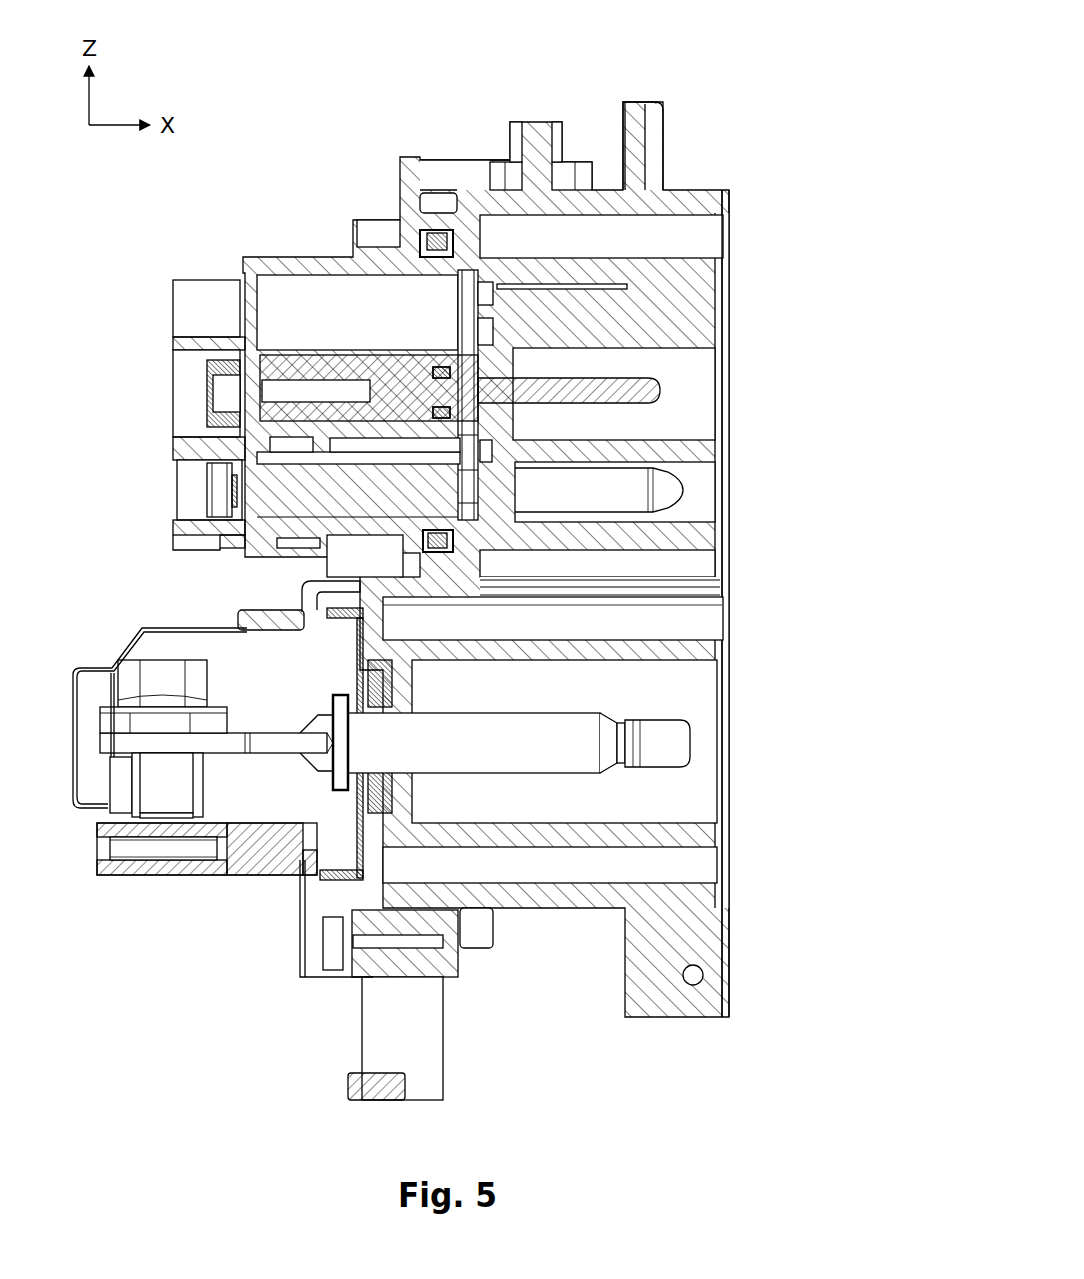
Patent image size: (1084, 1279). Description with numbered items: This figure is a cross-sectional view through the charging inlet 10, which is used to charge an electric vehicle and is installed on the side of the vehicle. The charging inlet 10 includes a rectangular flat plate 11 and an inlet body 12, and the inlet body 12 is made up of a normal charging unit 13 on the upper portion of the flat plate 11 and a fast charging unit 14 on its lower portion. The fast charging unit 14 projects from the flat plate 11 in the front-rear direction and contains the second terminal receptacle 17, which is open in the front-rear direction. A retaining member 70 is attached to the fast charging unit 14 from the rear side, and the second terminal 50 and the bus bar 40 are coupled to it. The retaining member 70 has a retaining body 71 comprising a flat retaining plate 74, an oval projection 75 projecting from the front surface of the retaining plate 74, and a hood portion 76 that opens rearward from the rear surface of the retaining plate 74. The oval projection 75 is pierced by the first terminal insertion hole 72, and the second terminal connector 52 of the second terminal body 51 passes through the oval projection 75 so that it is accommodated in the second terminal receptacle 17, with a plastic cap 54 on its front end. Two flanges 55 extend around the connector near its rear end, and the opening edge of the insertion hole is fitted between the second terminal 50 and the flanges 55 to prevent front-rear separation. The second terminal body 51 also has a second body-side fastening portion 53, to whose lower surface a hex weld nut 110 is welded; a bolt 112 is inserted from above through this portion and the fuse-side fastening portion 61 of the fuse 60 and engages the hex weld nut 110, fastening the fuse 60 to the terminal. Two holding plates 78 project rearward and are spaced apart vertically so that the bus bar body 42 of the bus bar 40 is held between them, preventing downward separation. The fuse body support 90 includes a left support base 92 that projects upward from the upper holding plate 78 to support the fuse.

The charging inlet 10 is at (737, 84).
The flat plate 11 is at (633, 143).
The inlet body 12 is at (812, 478).
The normal charging unit 13 is at (737, 413).
The fast charging unit 14 is at (742, 720).
The second terminal receptacle 17 is at (690, 797).
The bus bar 40 is at (163, 896).
The bus bar body 42 is at (124, 852).
The second terminal 50 is at (700, 742).
The second terminal body 51 is at (549, 783).
The second terminal connector 52 is at (496, 756).
The second body-side fastening portion 53 is at (210, 742).
The plastic cap 54 is at (652, 752).
The flanges 55 is at (372, 880).
The fuse 60 is at (160, 719).
The fuse-side fastening portion 61 is at (108, 725).
The retaining member 70 is at (99, 900).
The retaining body 71 is at (228, 616).
The first terminal insertion hole 72 is at (360, 760).
The retaining plate 74 is at (290, 590).
The oval projection 75 is at (347, 590).
The hood portion 76 is at (277, 617).
The holding plates 78 is at (188, 868).
The fuse body support 90 is at (326, 805).
The left support base 92 is at (259, 810).
The hex weld nut 110 is at (122, 790).
The bolt 112 is at (160, 678).